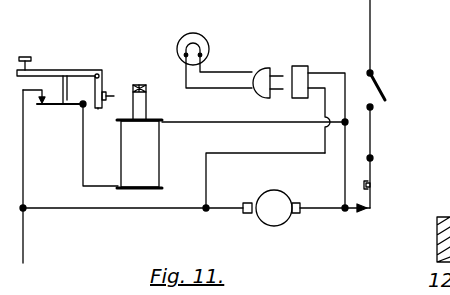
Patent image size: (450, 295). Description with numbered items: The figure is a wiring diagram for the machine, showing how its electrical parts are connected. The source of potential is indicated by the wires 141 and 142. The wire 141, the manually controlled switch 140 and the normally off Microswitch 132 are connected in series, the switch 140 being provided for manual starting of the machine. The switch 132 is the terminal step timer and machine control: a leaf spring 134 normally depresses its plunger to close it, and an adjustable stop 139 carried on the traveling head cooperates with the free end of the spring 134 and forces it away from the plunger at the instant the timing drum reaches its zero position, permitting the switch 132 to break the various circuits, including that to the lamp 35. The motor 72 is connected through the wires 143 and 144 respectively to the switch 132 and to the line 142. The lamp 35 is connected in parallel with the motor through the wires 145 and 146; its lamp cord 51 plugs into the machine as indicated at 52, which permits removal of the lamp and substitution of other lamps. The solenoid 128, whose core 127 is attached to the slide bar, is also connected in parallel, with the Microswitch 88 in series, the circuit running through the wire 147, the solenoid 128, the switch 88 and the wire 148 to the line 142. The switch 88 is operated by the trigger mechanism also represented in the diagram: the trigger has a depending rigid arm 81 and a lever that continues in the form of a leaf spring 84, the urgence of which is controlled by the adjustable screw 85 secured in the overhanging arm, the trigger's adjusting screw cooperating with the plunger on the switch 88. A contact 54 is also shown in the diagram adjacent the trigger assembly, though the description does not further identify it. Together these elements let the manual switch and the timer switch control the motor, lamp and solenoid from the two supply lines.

The adjustable screw 85 is at (24, 57).
The leaf spring 84 is at (49, 70).
The contact 54 is at (105, 91).
The Microswitch 88 is at (39, 108).
The depending rigid arm 81 is at (98, 108).
The core 127 is at (140, 85).
The solenoid 128 is at (150, 144).
The lamp 35 is at (207, 38).
The lamp cord 51 is at (231, 69).
The plug connection 52 is at (266, 67).
The wire 141 is at (372, 43).
The manually controlled switch 140 is at (382, 89).
The leaf spring 134 is at (373, 172).
The adjustable stop 139 is at (372, 186).
The Microswitch 132 is at (373, 208).
The wire 143 is at (333, 210).
The wire 145 is at (344, 165).
The wire 146 is at (208, 175).
The wire 147 is at (258, 124).
The wire 148 is at (25, 175).
The wire 142 is at (25, 256).
The wire 144 is at (177, 207).
The motor 72 is at (281, 221).